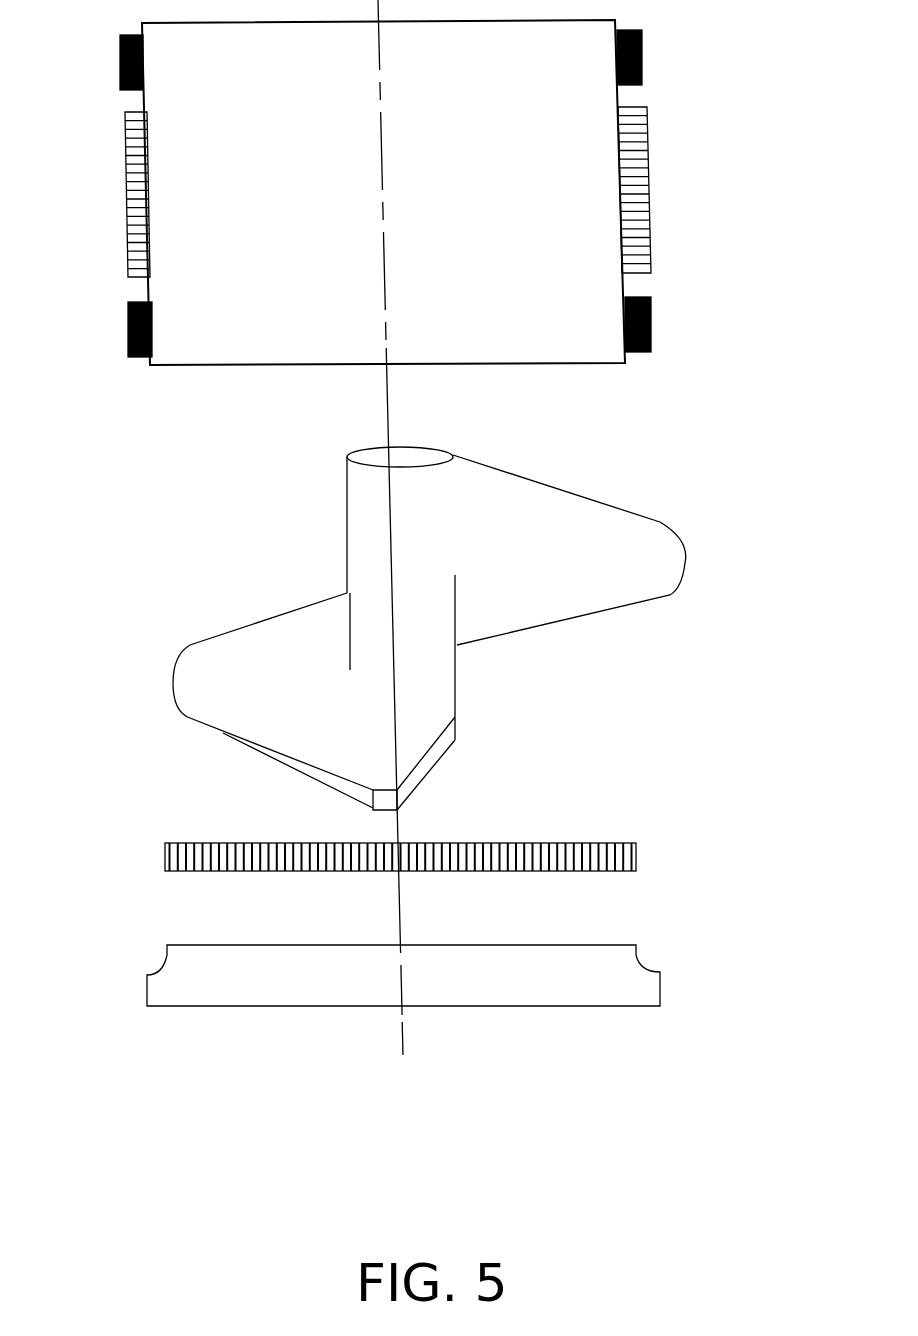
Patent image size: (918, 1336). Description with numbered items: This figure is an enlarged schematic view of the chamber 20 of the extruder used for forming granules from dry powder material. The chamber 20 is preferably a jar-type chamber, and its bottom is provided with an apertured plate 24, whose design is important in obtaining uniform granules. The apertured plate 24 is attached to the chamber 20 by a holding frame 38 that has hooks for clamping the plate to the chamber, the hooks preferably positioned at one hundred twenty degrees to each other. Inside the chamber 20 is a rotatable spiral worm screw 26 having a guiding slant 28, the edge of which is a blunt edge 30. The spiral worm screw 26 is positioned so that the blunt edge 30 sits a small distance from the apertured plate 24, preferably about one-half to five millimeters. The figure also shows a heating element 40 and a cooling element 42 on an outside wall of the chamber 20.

The chamber 20 is at (640, 205).
The apertured plate 24 is at (637, 857).
The spiral worm screw 26 is at (686, 567).
The guiding slant 28 is at (297, 678).
The blunt edge 30 is at (388, 800).
The holding frame 38 is at (650, 987).
The heating element 40 is at (120, 72).
The cooling element 42 is at (130, 212).